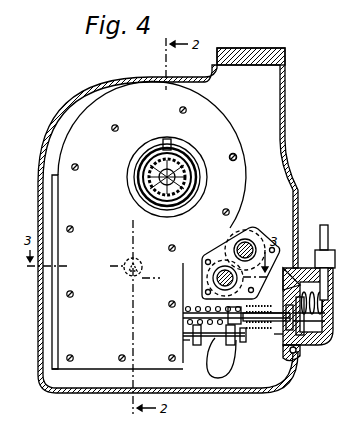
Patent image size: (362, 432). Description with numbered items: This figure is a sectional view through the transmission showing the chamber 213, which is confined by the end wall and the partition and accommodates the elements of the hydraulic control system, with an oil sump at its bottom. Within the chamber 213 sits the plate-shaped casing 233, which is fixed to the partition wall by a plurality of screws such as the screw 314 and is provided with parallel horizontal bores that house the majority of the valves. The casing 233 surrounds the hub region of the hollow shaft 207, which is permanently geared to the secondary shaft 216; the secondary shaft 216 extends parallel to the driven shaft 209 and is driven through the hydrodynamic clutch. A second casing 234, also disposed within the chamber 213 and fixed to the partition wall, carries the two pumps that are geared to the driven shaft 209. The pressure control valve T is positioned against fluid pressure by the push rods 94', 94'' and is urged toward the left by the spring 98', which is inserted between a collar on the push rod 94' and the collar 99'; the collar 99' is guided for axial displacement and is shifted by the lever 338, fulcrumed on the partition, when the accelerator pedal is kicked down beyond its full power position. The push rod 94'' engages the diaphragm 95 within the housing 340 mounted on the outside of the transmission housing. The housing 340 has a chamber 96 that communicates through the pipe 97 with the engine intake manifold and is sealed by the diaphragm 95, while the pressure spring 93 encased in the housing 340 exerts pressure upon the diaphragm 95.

The chamber 213 is at (277, 85).
The plate-shaped casing 233 is at (97, 133).
The hollow shaft 207 is at (166, 150).
The driven shaft 209 is at (147, 176).
The screw 314 is at (236, 156).
The second casing 234 is at (265, 243).
The secondary shaft 216 is at (131, 272).
The push rod 94' is at (235, 302).
The push rod 94'' is at (288, 373).
The spring 98' is at (214, 373).
The collar 99' is at (268, 331).
The lever 338 is at (230, 368).
The housing 340 is at (331, 286).
The pressure spring 93 is at (334, 320).
The chamber 96 is at (316, 333).
The pipe 97 is at (325, 226).
The diaphragm 95 is at (300, 346).
The pressure control valve T is at (190, 359).